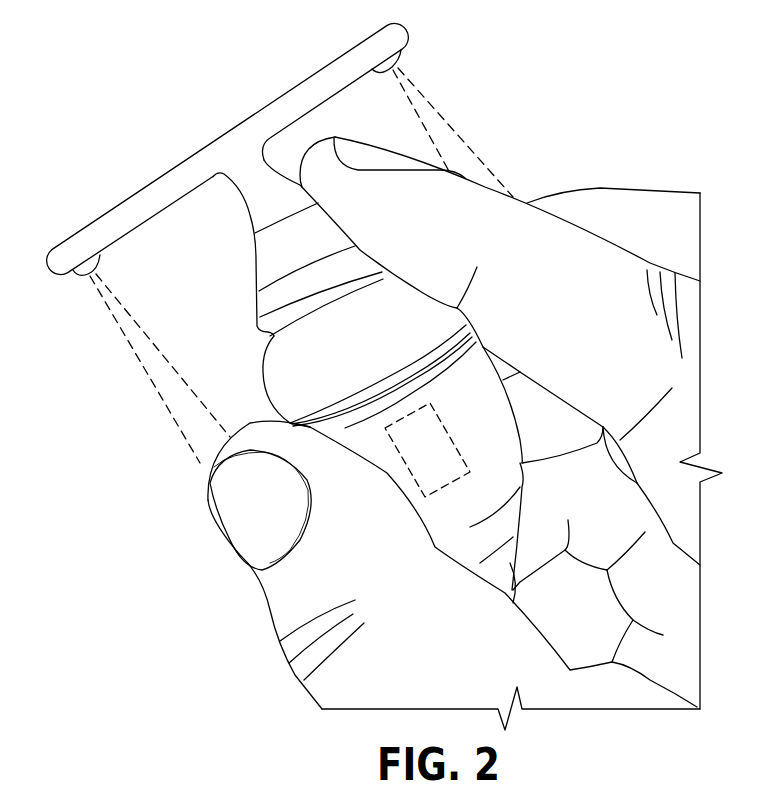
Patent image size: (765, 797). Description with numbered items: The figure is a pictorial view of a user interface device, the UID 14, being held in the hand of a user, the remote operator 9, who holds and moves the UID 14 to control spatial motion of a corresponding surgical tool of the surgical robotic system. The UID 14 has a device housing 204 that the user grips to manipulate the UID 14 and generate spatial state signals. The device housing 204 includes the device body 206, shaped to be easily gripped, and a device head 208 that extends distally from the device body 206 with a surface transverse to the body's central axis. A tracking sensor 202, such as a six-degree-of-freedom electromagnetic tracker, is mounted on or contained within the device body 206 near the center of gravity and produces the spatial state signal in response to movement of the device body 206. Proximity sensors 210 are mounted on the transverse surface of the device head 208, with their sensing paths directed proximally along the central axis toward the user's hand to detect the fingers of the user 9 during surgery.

The remote operator 9 is at (567, 263).
The UID 14 is at (248, 297).
The tracking sensor 202 is at (447, 430).
The device housing 204 is at (285, 355).
The device body 206 is at (297, 398).
The device head 208 is at (294, 90).
The proximity sensors 210 is at (85, 276).